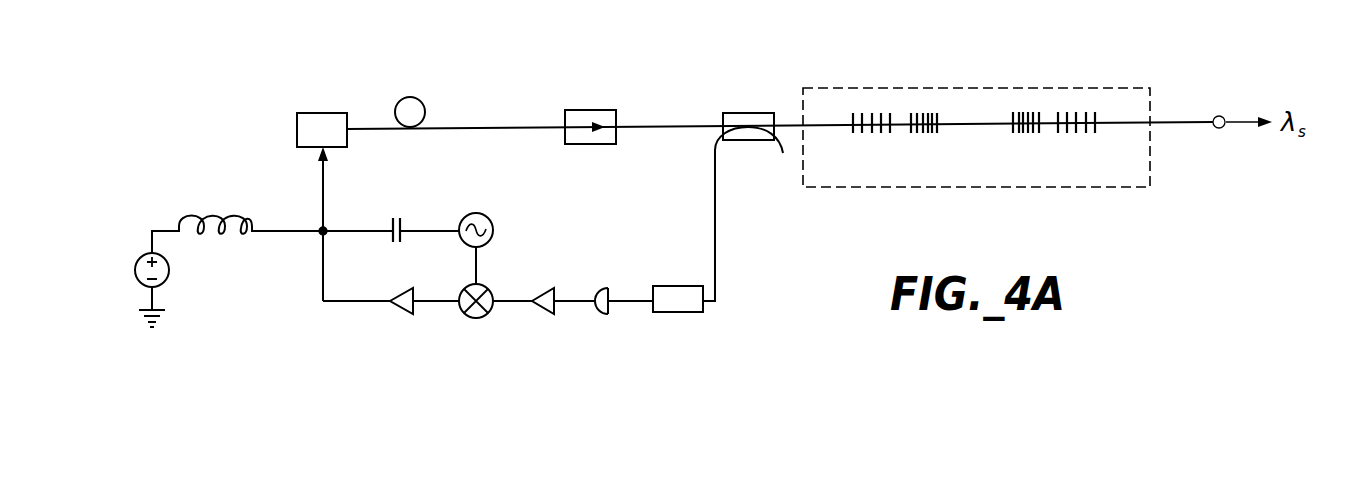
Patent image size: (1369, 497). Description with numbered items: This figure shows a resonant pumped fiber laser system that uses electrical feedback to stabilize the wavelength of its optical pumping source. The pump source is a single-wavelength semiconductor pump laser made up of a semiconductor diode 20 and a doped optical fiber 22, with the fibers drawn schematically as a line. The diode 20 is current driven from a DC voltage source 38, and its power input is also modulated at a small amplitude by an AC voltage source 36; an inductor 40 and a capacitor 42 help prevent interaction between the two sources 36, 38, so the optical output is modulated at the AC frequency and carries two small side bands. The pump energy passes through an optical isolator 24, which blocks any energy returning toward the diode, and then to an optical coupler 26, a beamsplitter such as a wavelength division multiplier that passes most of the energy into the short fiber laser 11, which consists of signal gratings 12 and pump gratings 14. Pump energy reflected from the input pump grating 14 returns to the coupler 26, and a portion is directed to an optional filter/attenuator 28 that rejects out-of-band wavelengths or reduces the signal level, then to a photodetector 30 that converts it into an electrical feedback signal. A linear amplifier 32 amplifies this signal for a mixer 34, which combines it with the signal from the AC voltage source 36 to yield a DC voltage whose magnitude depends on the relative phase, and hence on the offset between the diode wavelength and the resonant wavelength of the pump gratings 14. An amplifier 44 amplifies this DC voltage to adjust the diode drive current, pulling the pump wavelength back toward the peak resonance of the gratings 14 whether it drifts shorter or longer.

The short fiber laser 11 is at (908, 88).
The signal gratings 12 is at (938, 136).
The pump gratings 14 is at (889, 134).
The semiconductor diode 20 is at (325, 113).
The doped optical fiber 22 is at (412, 97).
The optical isolator 24 is at (597, 110).
The optical coupler 26 is at (757, 112).
The filter/attenuator 28 is at (681, 313).
The photodetector 30 is at (603, 316).
The linear amplifier 32 is at (545, 314).
The mixer 34 is at (458, 315).
The AC voltage source 36 is at (477, 212).
The DC voltage source 38 is at (170, 270).
The inductor 40 is at (223, 213).
The capacitor 42 is at (400, 218).
The amplifier 44 is at (401, 313).